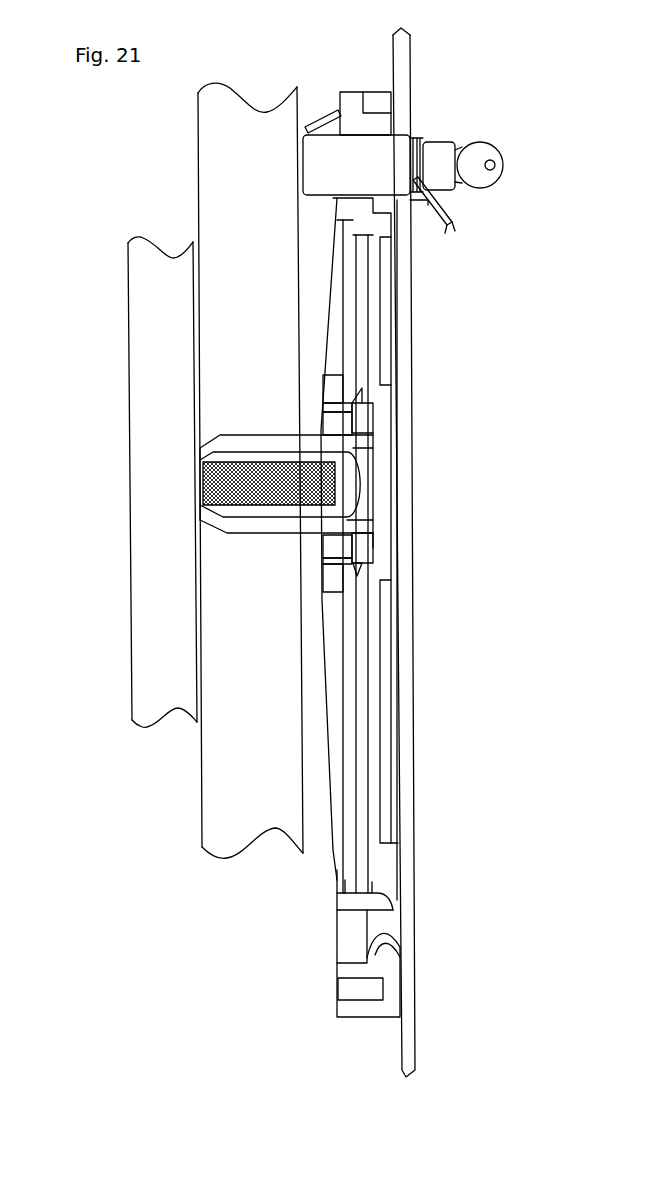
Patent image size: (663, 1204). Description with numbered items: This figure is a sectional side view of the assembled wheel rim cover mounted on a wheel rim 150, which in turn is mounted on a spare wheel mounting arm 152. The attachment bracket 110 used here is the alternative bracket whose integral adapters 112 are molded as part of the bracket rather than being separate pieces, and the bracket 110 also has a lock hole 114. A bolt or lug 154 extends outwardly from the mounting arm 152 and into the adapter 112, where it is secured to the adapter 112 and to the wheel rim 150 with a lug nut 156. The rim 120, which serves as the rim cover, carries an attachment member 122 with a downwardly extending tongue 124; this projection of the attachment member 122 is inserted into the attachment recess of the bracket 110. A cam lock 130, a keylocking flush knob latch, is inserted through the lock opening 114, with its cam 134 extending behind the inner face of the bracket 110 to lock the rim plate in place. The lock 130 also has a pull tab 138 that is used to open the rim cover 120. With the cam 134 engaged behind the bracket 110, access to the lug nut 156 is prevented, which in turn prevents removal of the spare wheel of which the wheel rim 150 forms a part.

The attachment bracket 110 is at (375, 355).
The integral adapter 112 is at (282, 434).
The lock hole 114 is at (362, 88).
The rim 120 is at (406, 642).
The attachment member 122 is at (390, 862).
The tongue 124 is at (374, 928).
The cam lock 130 is at (468, 98).
The cam 134 is at (335, 112).
The pull tab 138 is at (453, 218).
The wheel rim 150 is at (227, 167).
The mounting arm 152 is at (148, 307).
The lug 154 is at (200, 470).
The lug nut 156 is at (305, 508).